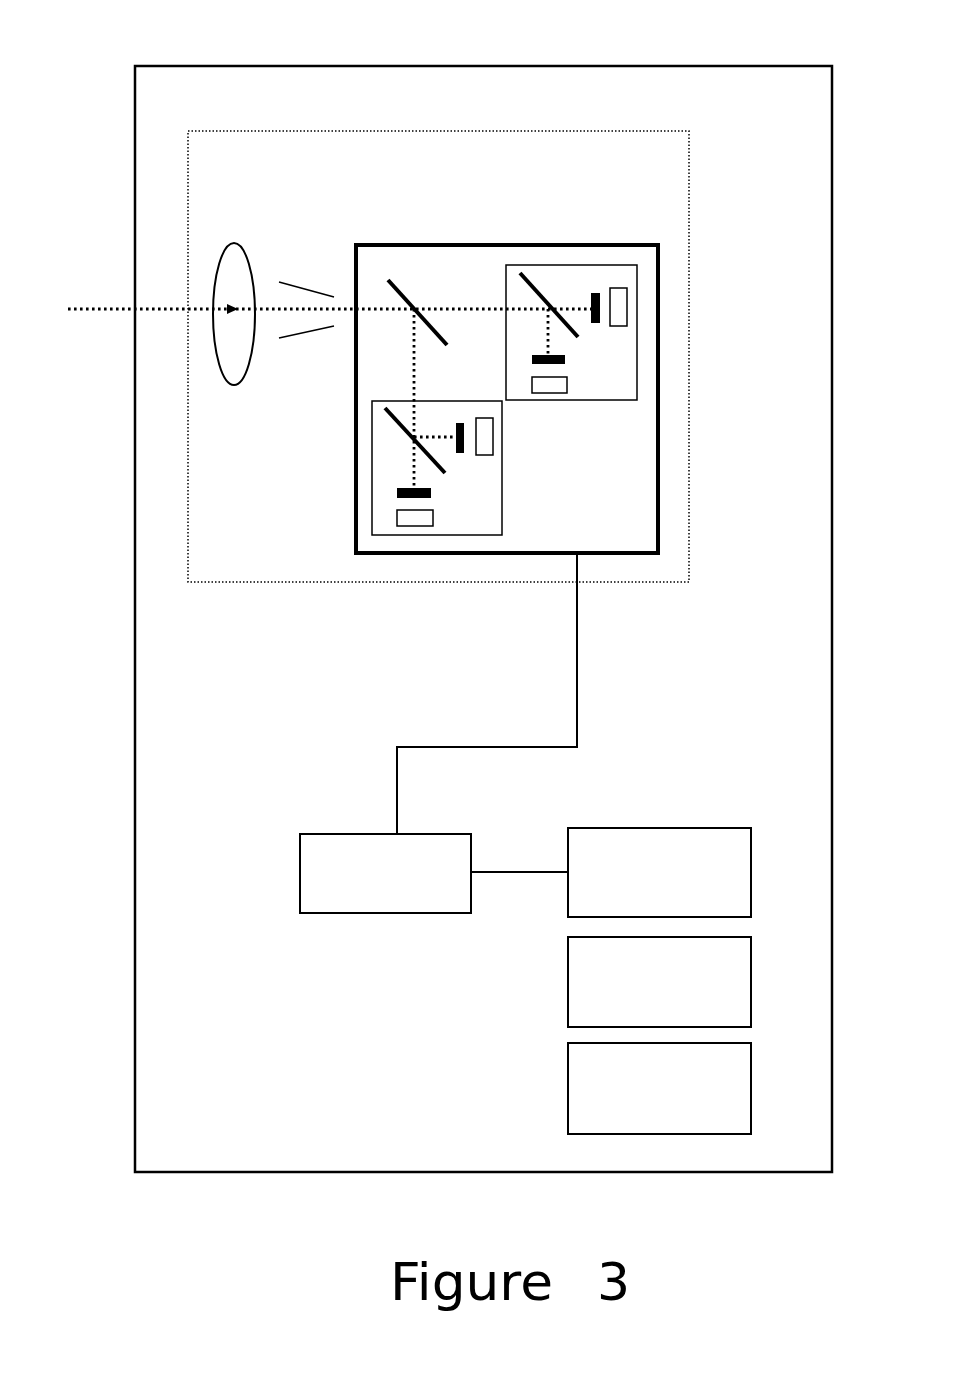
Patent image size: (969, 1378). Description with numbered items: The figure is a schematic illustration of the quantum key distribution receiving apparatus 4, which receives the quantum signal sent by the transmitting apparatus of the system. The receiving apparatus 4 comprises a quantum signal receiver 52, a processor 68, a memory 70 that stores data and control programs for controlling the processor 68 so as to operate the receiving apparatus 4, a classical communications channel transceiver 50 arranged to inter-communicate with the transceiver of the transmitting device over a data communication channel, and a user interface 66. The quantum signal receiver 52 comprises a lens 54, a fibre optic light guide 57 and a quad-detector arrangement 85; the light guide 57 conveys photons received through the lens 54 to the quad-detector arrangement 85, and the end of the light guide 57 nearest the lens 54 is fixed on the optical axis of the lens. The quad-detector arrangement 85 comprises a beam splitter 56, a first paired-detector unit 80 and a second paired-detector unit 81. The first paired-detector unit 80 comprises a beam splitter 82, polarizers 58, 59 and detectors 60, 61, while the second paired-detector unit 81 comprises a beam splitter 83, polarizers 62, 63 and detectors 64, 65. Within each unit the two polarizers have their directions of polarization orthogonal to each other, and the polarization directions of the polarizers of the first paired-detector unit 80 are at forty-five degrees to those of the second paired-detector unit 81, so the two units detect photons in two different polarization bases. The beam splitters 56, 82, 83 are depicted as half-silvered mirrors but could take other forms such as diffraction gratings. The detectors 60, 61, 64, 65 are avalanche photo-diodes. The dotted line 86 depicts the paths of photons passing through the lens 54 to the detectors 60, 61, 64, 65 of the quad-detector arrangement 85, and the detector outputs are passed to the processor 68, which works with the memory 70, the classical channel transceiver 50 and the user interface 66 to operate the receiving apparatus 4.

The QKD receiving apparatus 4 is at (176, 49).
The quantum signal receiver 52 is at (625, 583).
The lens 54 is at (227, 294).
The beam splitter 56 is at (397, 290).
The fibre optic light guide 57 is at (307, 333).
The polarizer 58 is at (605, 305).
The polarizer 59 is at (563, 358).
The detector 60 is at (622, 293).
The detector 61 is at (565, 385).
The polarizer 62 is at (408, 498).
The polarizer 63 is at (466, 453).
The detector 64 is at (419, 517).
The detector 65 is at (487, 438).
The processor 68 is at (343, 833).
The memory 70 is at (751, 883).
The classical communications channel transceiver 50 is at (751, 985).
The user interface 66 is at (751, 1085).
The first paired-detector unit 80 is at (570, 265).
The second paired-detector unit 81 is at (375, 435).
The beam splitter 82 is at (521, 274).
The beam splitter 83 is at (423, 442).
The quad-detector arrangement 85 is at (591, 517).
The dotted line 86 is at (373, 309).